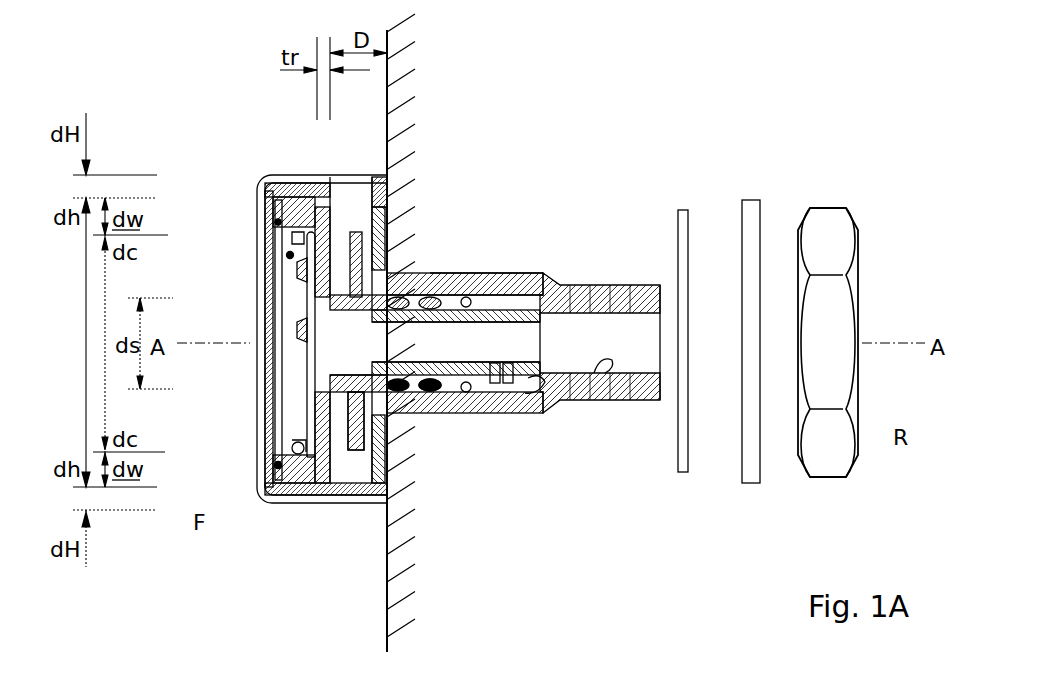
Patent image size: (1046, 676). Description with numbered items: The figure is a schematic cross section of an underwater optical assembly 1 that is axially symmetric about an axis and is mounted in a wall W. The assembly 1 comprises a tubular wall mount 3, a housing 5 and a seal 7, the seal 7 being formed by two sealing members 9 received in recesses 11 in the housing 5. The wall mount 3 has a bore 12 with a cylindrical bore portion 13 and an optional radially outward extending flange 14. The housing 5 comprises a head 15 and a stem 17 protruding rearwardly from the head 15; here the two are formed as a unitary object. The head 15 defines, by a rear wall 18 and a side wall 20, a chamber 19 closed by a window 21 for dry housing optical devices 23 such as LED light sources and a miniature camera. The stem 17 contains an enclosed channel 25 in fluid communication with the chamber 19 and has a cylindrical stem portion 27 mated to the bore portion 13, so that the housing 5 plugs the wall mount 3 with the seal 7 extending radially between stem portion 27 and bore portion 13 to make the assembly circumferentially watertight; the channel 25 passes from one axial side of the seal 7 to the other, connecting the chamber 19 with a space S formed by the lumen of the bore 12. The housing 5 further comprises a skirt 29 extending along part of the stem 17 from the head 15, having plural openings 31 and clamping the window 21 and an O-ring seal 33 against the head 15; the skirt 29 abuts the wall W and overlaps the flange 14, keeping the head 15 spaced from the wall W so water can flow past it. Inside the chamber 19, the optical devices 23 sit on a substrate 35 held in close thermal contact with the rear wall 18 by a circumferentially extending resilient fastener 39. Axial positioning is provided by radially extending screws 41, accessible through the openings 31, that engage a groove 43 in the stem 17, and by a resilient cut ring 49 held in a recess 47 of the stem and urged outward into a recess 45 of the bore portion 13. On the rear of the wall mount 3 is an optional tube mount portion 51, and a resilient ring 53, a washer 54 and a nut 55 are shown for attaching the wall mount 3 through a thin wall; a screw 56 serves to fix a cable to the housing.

The underwater optical assembly 1 is at (577, 100).
The tubular wall mount 3 is at (584, 272).
The housing 5 is at (286, 513).
The seal 7 is at (427, 400).
The sealing members 9 is at (393, 296).
The recesses 11 is at (457, 327).
The bore 12 is at (604, 368).
The cylindrical bore portion 13 is at (533, 388).
The radially outward extending flange 14 is at (378, 470).
The head 15 is at (258, 512).
The stem 17 is at (505, 275).
The rear wall 18 is at (328, 250).
The chamber 19 is at (288, 255).
The side wall 20 is at (309, 472).
The window 21 is at (268, 312).
The optical devices 23 is at (300, 276).
The enclosed channel 25 is at (447, 349).
The cylindrical stem portion 27 is at (515, 295).
The skirt 29 is at (285, 185).
The openings 31 is at (338, 192).
The seal 33 is at (276, 222).
The substrate 35 is at (300, 432).
The fastener 39 is at (296, 456).
The screws 41 is at (357, 428).
The groove 43 is at (357, 390).
The recess 45 is at (470, 285).
The recess 47 is at (464, 393).
The resilient cut ring 49 is at (466, 296).
The tube mount portion 51 is at (630, 288).
The resilient ring 53 is at (683, 213).
The washer 54 is at (751, 213).
The nut 55 is at (828, 218).
The screw 56 is at (506, 384).
The wall W is at (426, 328).
The space S is at (645, 349).